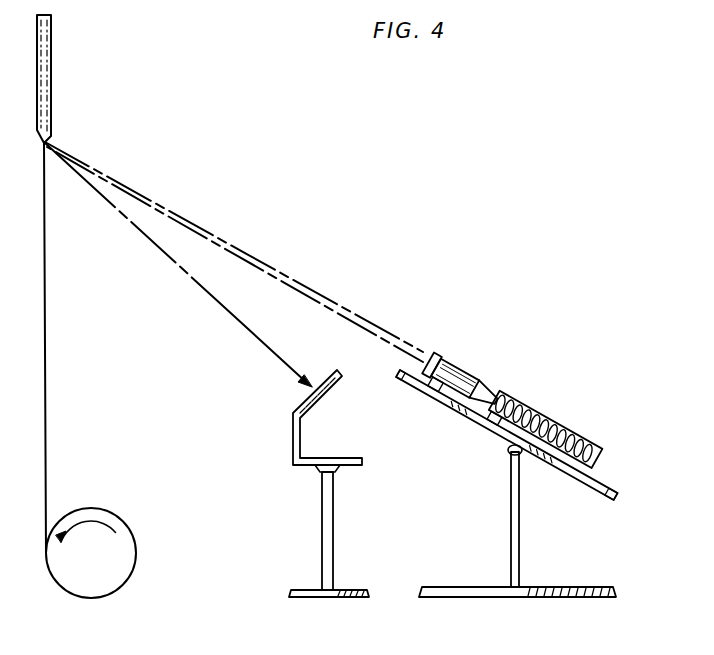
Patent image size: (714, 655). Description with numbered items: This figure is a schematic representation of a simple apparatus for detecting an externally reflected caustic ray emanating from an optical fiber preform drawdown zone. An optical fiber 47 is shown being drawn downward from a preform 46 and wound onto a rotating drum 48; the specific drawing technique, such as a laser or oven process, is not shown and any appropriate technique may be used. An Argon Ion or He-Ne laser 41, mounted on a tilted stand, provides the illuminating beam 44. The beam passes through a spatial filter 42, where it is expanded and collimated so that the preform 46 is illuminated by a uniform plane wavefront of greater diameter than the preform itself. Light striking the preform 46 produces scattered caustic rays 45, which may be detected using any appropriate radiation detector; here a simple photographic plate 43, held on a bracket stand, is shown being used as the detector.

The laser 41 is at (563, 429).
The spatial filter 42 is at (460, 369).
The photographic plate 43 is at (300, 398).
The illuminating beam 44 is at (142, 193).
The scattered caustic rays 45 is at (207, 296).
The preform 46 is at (52, 92).
The optical fiber 47 is at (46, 388).
The drum 48 is at (136, 549).